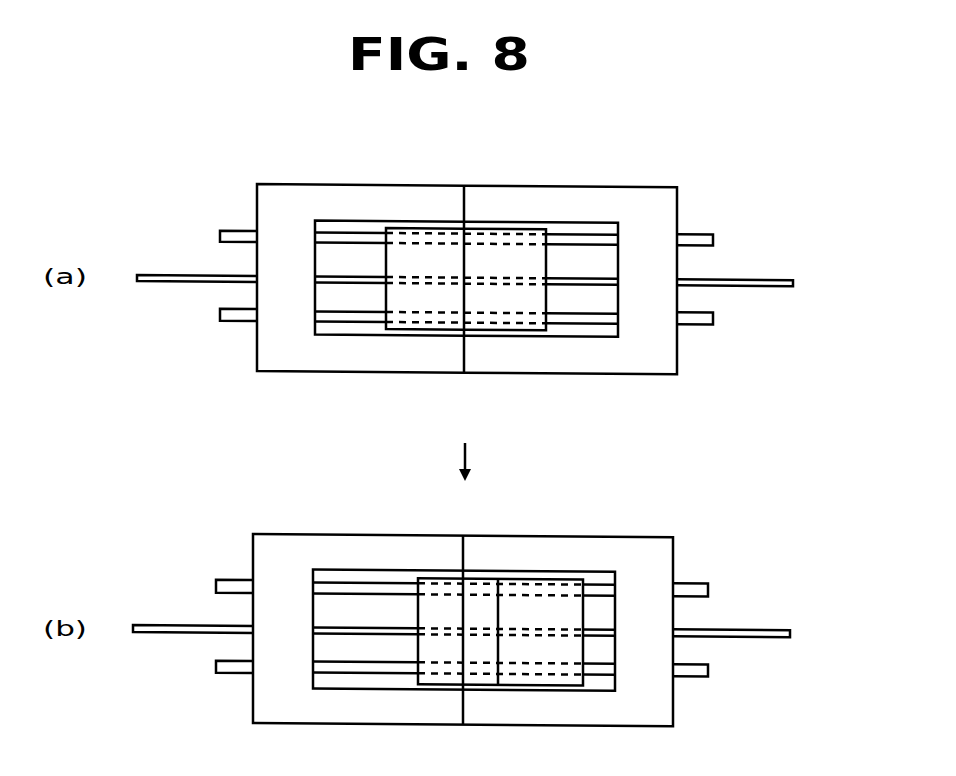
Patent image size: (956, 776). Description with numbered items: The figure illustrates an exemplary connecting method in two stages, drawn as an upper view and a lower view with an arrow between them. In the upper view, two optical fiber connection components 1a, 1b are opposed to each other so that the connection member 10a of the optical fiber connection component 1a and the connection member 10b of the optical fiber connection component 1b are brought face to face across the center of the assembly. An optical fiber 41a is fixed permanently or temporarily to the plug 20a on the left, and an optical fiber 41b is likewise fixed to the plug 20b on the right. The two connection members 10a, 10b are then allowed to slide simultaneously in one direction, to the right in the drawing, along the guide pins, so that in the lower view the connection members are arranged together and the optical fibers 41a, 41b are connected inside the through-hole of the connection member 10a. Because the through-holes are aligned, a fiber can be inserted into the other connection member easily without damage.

The optical fiber connection component 1a is at (346, 181).
The optical fiber connection component 1b is at (560, 181).
The connection member 10a is at (415, 298).
The connection member 10b is at (512, 298).
The plug 20a is at (270, 347).
The plug 20b is at (668, 345).
The optical fiber 41a is at (182, 272).
The optical fiber 41b is at (755, 278).